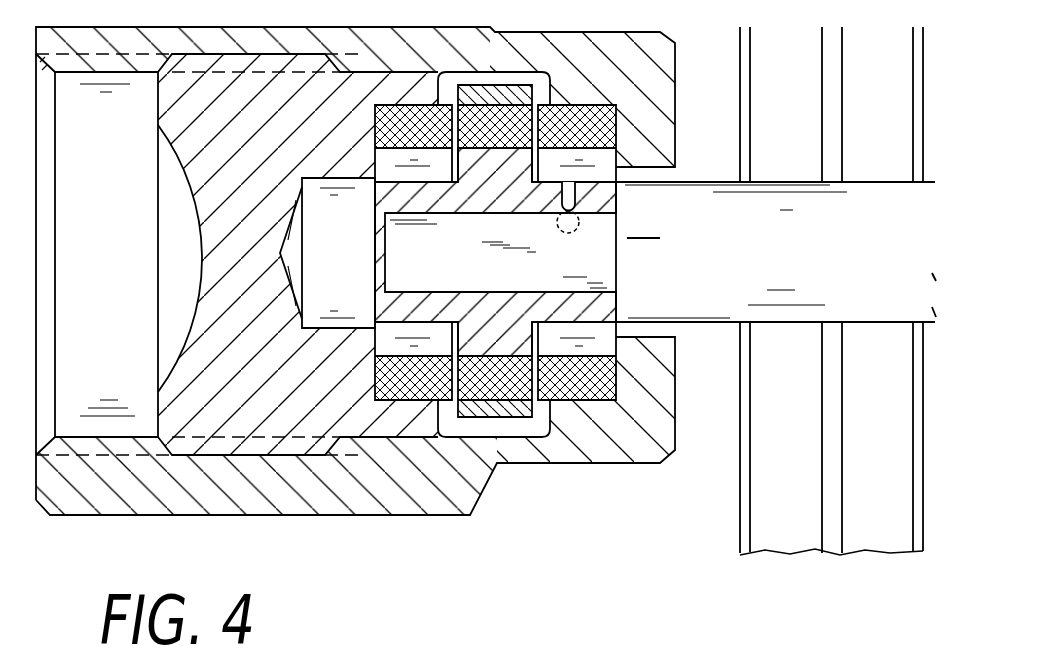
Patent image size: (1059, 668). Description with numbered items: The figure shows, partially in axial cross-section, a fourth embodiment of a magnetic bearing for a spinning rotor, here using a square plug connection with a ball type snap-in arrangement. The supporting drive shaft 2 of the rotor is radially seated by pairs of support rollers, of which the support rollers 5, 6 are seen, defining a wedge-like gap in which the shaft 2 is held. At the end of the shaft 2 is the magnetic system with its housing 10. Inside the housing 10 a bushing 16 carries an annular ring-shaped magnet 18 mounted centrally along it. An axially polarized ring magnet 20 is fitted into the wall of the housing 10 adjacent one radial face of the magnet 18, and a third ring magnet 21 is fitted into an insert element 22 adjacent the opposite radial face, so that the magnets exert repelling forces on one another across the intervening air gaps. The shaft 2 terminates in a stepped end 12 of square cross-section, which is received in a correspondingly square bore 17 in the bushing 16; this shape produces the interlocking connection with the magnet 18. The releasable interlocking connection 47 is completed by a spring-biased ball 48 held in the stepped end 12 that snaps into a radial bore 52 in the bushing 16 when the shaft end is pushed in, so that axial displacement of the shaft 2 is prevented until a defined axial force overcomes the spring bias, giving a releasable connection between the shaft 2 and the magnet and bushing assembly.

The drive shaft 2 is at (720, 303).
The support roller 5 is at (813, 537).
The support roller 6 is at (813, 537).
The housing 10 is at (150, 502).
The stepped end 12 is at (403, 267).
The bushing 16 is at (395, 198).
The bore 17 is at (430, 217).
The ring-shaped magnet 18 is at (515, 392).
The ring magnet 20 is at (597, 392).
The ring magnet 21 is at (420, 398).
The insert element 22 is at (290, 418).
The releasable interlocking connection 47 is at (620, 239).
The ball 48 is at (582, 206).
The bore 52 is at (577, 180).